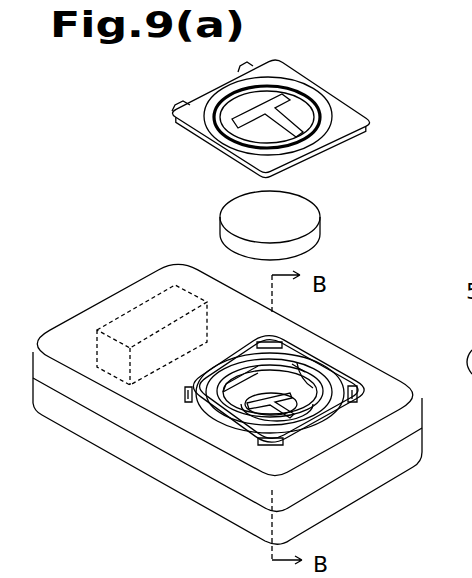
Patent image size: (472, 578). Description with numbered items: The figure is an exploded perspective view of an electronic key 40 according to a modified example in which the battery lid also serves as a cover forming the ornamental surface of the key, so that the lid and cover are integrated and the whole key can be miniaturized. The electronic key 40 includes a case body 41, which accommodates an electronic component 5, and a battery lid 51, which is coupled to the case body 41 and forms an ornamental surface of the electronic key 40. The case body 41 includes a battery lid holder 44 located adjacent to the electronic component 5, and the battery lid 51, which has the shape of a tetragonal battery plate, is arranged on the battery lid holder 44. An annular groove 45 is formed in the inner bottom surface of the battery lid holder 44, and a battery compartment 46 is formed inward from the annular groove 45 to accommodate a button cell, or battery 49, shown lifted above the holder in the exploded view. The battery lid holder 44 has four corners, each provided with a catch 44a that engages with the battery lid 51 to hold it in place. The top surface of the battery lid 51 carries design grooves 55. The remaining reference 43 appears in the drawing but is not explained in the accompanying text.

The electronic key 40 is at (121, 217).
The case body 41 is at (70, 332).
The recess 43 is at (385, 296).
The battery lid holder 44 is at (292, 348).
The catch 44a is at (190, 373).
The annular groove 45 is at (297, 374).
The battery compartment 46 is at (322, 373).
The battery 49 is at (312, 211).
The battery lid 51 is at (349, 112).
The design grooves 55 is at (275, 98).
The electronic component 5 is at (150, 298).